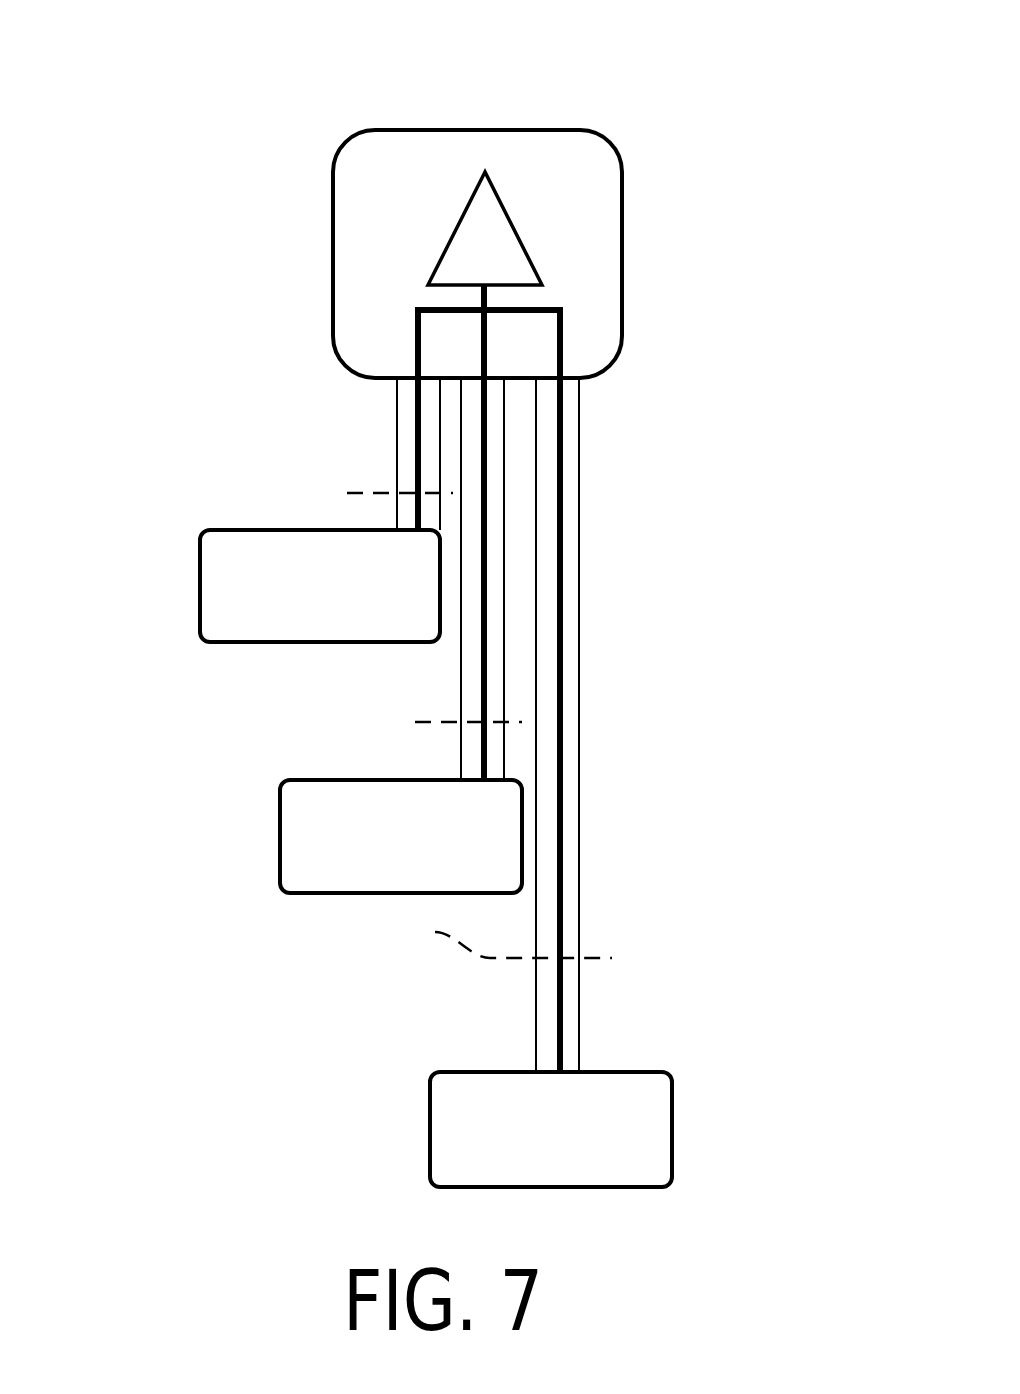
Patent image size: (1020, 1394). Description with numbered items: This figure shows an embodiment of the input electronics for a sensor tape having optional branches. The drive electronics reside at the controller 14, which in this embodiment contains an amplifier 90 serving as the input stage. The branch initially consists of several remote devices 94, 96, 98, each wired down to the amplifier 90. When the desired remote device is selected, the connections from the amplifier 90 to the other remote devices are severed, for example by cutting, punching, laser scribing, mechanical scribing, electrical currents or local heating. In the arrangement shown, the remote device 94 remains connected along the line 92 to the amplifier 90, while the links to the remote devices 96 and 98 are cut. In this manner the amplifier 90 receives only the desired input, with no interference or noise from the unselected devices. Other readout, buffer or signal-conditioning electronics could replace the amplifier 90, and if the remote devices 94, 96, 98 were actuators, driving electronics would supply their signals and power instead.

The controller 14 is at (477, 130).
The amplifier 90 is at (513, 232).
The line 92 is at (563, 345).
The remote device 94 is at (430, 1125).
The remote device 96 is at (280, 840).
The remote device 98 is at (200, 585).